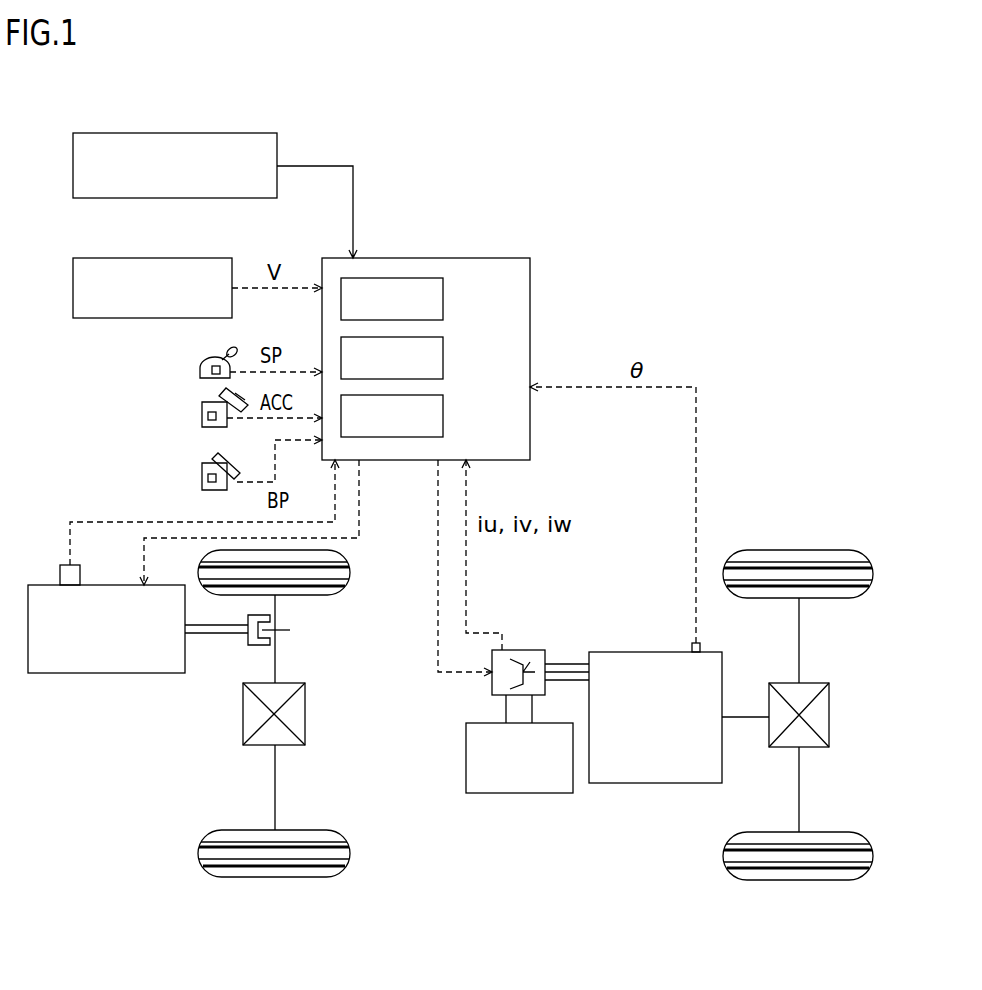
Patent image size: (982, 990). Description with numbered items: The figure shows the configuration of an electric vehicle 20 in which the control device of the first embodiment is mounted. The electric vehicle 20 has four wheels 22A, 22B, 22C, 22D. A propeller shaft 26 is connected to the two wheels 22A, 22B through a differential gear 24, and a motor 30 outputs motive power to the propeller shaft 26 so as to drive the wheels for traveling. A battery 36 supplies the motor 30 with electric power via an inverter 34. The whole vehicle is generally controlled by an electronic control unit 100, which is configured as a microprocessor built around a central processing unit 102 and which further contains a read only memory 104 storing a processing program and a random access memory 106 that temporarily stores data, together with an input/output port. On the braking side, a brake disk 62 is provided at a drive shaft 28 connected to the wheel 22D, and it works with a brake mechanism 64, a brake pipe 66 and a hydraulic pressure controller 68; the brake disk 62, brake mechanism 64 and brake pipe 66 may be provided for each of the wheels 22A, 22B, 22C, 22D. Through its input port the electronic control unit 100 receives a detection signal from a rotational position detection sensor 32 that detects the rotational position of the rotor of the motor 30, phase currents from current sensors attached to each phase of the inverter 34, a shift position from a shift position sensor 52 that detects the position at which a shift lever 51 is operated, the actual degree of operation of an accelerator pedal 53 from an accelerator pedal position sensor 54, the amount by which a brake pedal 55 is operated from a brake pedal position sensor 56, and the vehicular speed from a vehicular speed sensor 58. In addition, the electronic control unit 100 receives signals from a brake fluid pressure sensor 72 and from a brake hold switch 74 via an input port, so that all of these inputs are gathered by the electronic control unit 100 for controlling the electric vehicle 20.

The electric vehicle 20 is at (598, 310).
The wheel 22A is at (808, 880).
The wheel 22B is at (812, 550).
The wheel 22C is at (350, 856).
The wheel 22D is at (350, 576).
The differential gear 24 is at (815, 683).
The propeller shaft 26 is at (745, 718).
The drive shaft 28 is at (278, 659).
The motor 30 is at (612, 652).
The rotational position detection sensor 32 is at (690, 647).
The inverter 34 is at (526, 650).
The battery 36 is at (466, 760).
The shift lever 51 is at (227, 350).
The shift position sensor 52 is at (210, 370).
The accelerator pedal 53 is at (223, 396).
The accelerator pedal position sensor 54 is at (202, 418).
The brake pedal 55 is at (224, 460).
The brake pedal position sensor 56 is at (202, 482).
The vehicular speed sensor 58 is at (108, 258).
The brake disk 62 is at (290, 630).
The brake mechanism 64 is at (248, 644).
The brake pipe 66 is at (215, 634).
The hydraulic pressure controller 68 is at (80, 673).
The brake fluid pressure sensor 72 is at (64, 565).
The brake hold switch 74 is at (108, 133).
The electronic control unit 100 is at (488, 258).
The central processing unit 102 is at (443, 298).
The read only memory 104 is at (443, 356).
The random access memory 106 is at (443, 415).